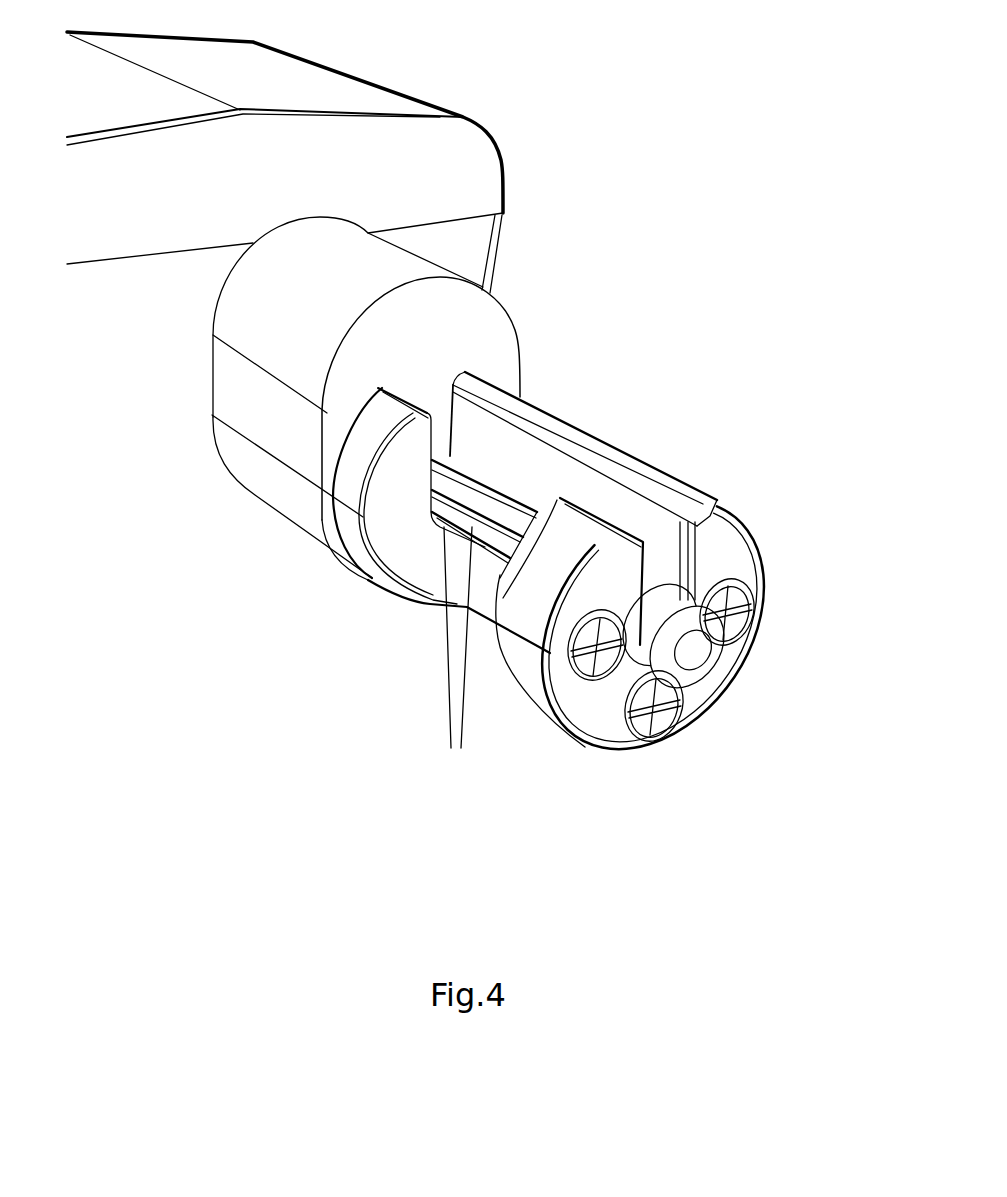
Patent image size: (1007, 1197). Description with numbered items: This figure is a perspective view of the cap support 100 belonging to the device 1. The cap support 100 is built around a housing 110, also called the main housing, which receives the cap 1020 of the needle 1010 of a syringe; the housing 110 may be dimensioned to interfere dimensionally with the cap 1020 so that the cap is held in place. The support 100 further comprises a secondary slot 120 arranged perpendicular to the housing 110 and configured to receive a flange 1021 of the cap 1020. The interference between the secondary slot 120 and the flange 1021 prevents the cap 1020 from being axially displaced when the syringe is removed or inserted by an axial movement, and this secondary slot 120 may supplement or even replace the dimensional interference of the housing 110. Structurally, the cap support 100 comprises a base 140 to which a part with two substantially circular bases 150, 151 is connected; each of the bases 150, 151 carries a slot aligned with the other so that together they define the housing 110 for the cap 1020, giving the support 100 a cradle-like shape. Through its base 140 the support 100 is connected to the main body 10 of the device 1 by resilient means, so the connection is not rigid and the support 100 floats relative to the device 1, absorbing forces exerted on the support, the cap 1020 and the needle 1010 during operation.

The device 1 is at (480, 78).
The main body 10 is at (515, 514).
The cap support 100 is at (589, 592).
The housing 110 is at (548, 483).
The secondary slot 120 is at (687, 560).
The base 140 is at (258, 418).
The base 150 is at (343, 492).
The base 151 is at (536, 686).
The needle 1010 is at (690, 668).
The cap 1020 is at (462, 485).
The flange 1021 is at (718, 618).